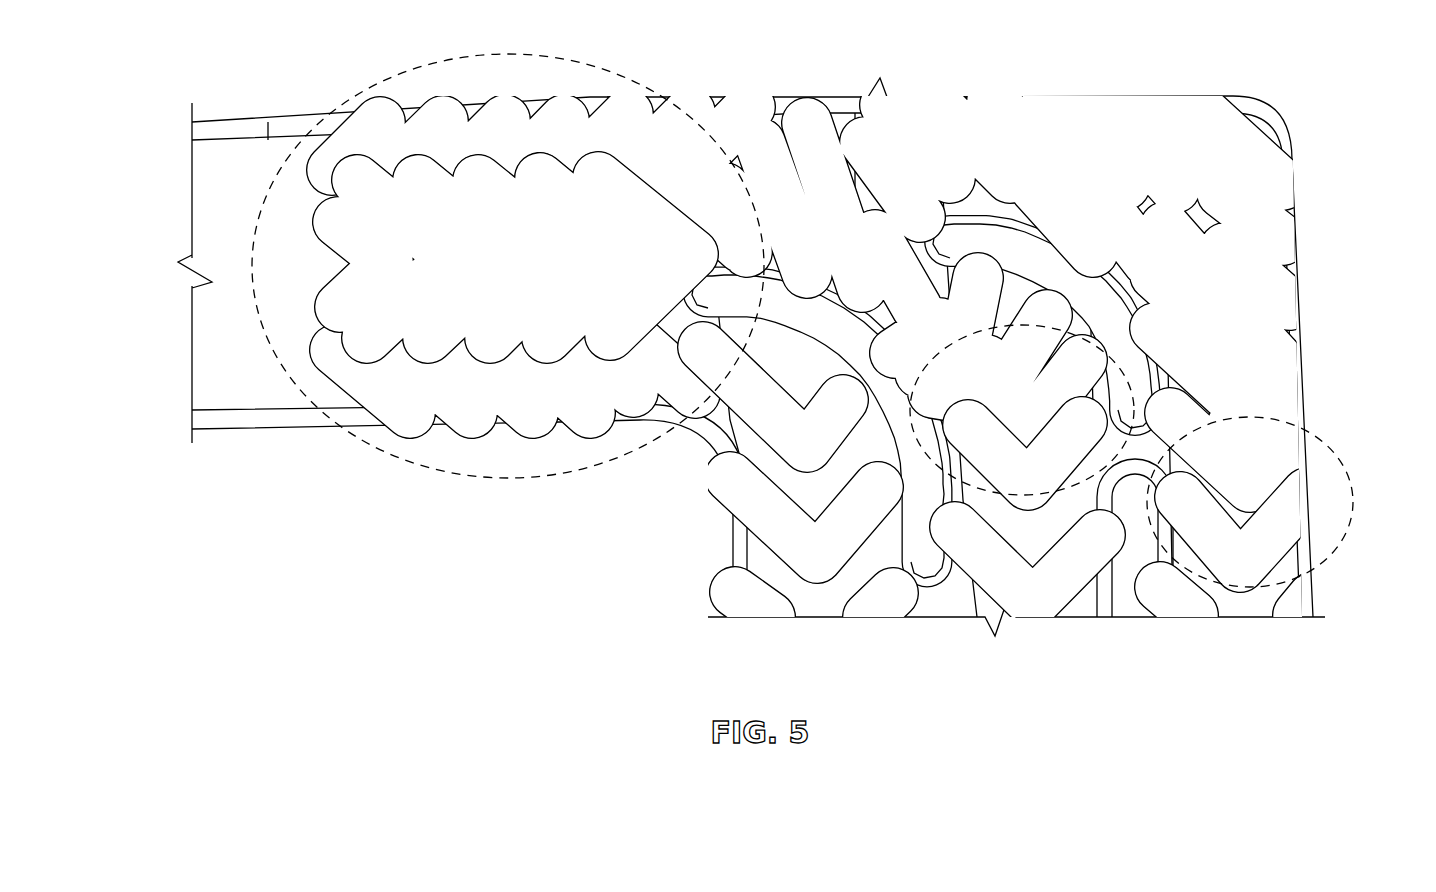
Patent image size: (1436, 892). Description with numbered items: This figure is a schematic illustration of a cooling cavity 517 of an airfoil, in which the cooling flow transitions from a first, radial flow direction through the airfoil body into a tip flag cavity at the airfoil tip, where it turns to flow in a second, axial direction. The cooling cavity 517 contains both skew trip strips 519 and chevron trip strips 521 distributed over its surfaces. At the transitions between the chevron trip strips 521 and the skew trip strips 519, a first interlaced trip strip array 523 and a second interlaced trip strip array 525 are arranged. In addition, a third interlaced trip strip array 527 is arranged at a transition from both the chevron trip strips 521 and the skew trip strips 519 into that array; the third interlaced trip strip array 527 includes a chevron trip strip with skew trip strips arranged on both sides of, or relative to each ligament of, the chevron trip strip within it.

The cooling cavity 517 is at (1245, 183).
The skew trip strips 519 is at (557, 126).
The chevron trip strips 521 is at (347, 282).
The first interlaced trip strip array 523 is at (1320, 558).
The second interlaced trip strip array 525 is at (1017, 493).
The third interlaced trip strip array 527 is at (512, 55).